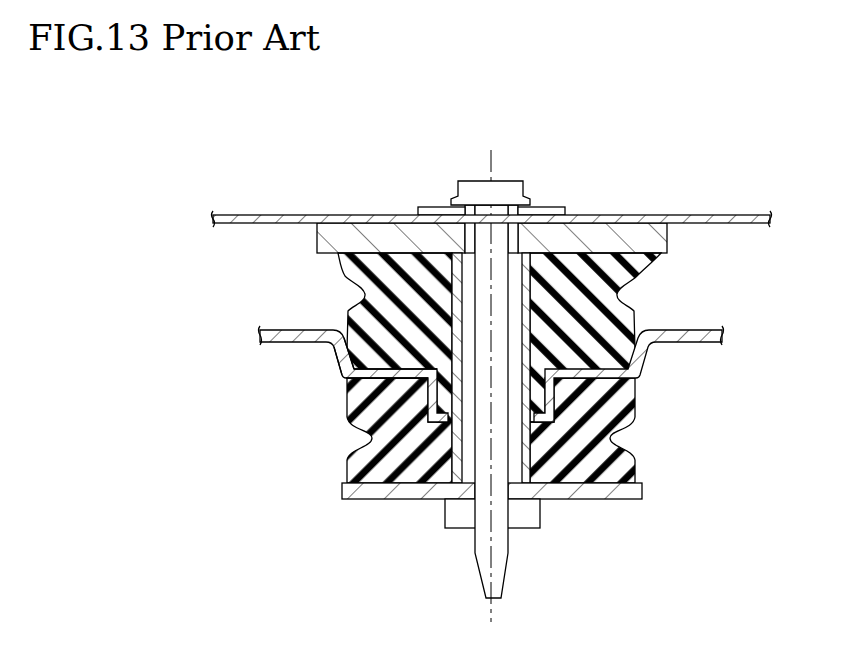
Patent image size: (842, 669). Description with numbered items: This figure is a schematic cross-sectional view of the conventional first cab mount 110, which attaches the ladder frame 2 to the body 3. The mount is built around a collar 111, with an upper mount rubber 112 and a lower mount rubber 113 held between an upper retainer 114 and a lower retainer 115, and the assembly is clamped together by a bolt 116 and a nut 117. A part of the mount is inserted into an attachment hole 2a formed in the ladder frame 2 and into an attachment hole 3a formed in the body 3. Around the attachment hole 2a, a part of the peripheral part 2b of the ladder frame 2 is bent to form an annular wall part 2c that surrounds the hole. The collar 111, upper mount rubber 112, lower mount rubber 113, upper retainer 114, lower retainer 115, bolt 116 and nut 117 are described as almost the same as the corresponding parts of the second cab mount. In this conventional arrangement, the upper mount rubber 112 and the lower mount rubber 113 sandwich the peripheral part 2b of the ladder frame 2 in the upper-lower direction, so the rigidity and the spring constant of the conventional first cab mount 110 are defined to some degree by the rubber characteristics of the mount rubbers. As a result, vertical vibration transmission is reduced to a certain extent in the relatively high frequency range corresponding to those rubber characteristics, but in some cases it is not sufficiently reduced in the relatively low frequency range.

The conventional first cab mount 110 is at (669, 447).
The collar 111 is at (540, 305).
The upper mount rubber 112 is at (395, 262).
The lower mount rubber 113 is at (372, 457).
The upper retainer 114 is at (345, 238).
The lower retainer 115 is at (612, 482).
The bolt 116 is at (483, 193).
The nut 117 is at (462, 520).
The ladder frame 2 is at (288, 336).
The attachment hole 2a is at (548, 365).
The peripheral part 2b is at (385, 352).
The annular wall part 2c is at (373, 383).
The body 3 is at (727, 215).
The attachment hole 3a is at (497, 212).